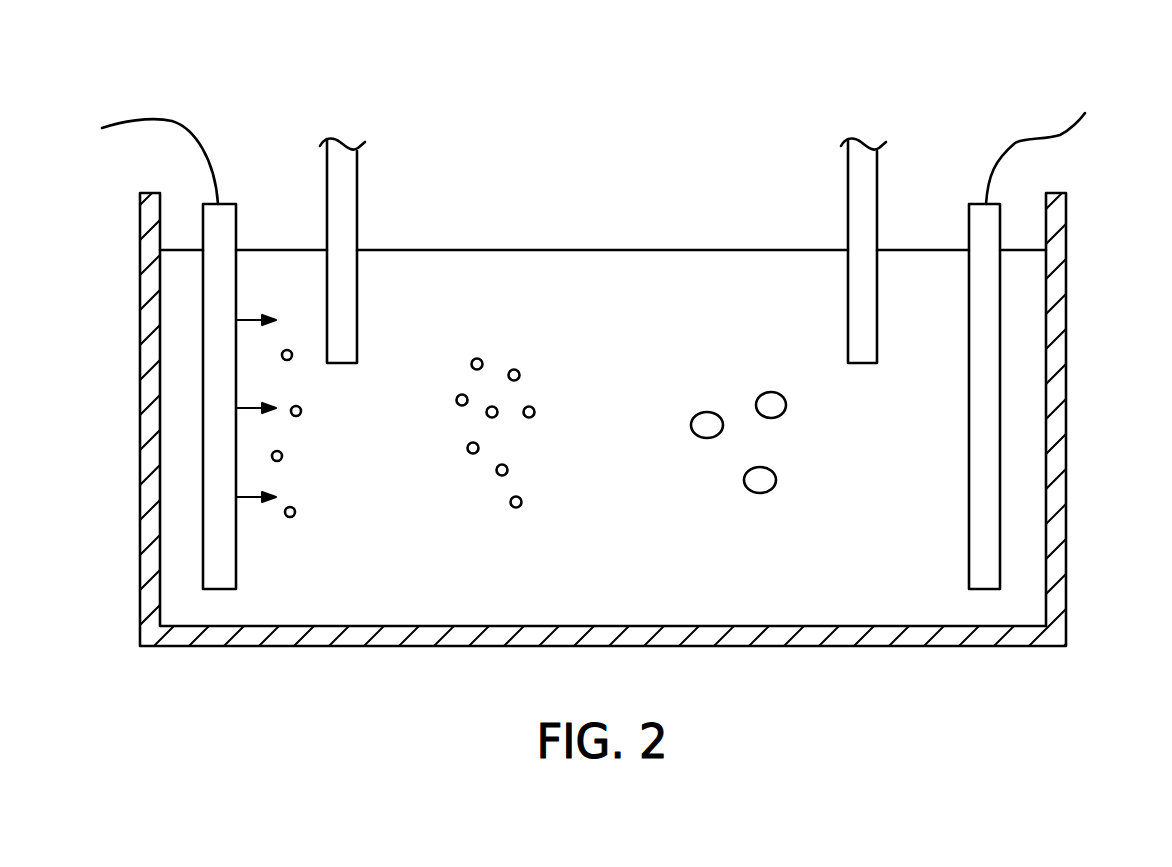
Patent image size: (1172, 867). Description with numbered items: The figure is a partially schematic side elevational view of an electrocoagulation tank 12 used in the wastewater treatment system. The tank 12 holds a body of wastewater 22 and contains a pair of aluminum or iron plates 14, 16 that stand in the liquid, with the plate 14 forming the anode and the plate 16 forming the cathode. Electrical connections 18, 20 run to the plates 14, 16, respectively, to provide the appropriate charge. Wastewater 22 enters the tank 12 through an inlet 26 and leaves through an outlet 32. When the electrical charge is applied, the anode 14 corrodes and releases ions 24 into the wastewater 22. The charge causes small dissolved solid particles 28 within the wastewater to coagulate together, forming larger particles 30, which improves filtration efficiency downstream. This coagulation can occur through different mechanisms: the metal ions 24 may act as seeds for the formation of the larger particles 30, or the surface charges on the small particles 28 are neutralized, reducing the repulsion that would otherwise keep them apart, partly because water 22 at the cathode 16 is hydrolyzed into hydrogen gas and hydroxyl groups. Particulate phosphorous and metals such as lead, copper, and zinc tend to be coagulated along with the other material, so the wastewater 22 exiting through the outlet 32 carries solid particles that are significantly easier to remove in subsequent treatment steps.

The electrocoagulation tank 12 is at (1066, 312).
The anode plate 14 is at (236, 567).
The cathode plate 16 is at (969, 518).
The electrical connection 18 is at (170, 120).
The electrical connection 20 is at (1017, 142).
The wastewater 22 is at (614, 321).
The ions 24 is at (283, 455).
The inlet 26 is at (357, 214).
The small dissolved solid particles 28 is at (534, 414).
The larger particles 30 is at (786, 407).
The outlet 32 is at (848, 208).